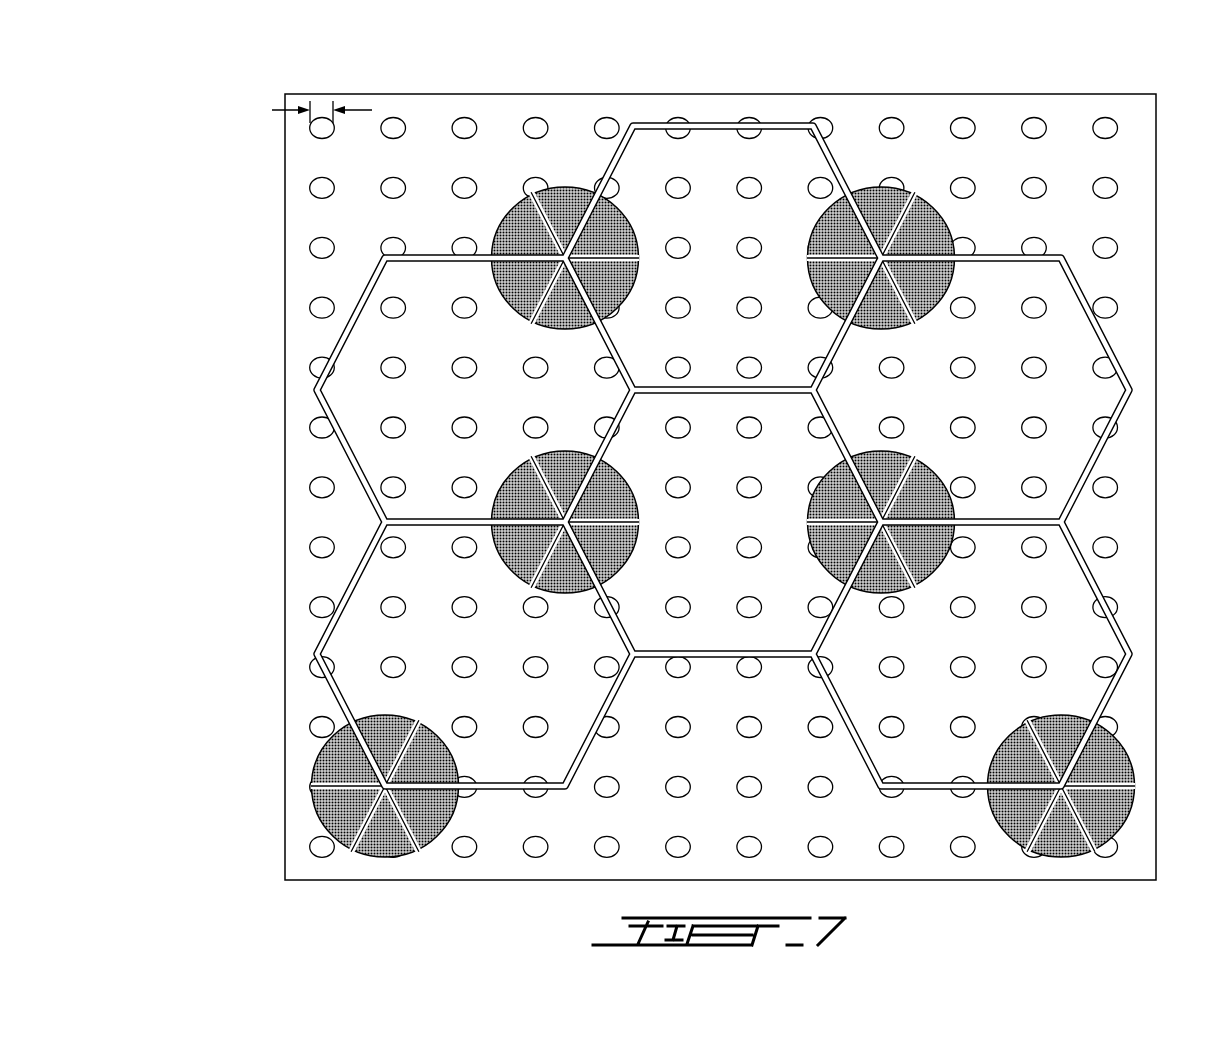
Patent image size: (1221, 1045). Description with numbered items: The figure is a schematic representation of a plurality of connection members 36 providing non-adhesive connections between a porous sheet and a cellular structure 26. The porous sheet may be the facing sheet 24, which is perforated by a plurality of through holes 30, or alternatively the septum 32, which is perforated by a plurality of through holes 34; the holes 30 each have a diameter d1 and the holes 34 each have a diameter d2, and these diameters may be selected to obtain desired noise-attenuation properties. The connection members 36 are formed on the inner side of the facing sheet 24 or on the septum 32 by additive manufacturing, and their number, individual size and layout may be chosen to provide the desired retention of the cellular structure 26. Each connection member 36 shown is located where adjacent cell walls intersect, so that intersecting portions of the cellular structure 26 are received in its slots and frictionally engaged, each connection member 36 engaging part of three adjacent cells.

The facing sheet 24 is at (653, 487).
The septum 32 is at (320, 217).
The cellular structure 26 is at (343, 345).
The through holes 30 is at (665, 443).
The through holes 34 is at (535, 125).
The connection members 36 is at (525, 237).
The diameter of holes in facing sheet d1 is at (322, 82).
The diameter of holes in septum d2 is at (320, 108).